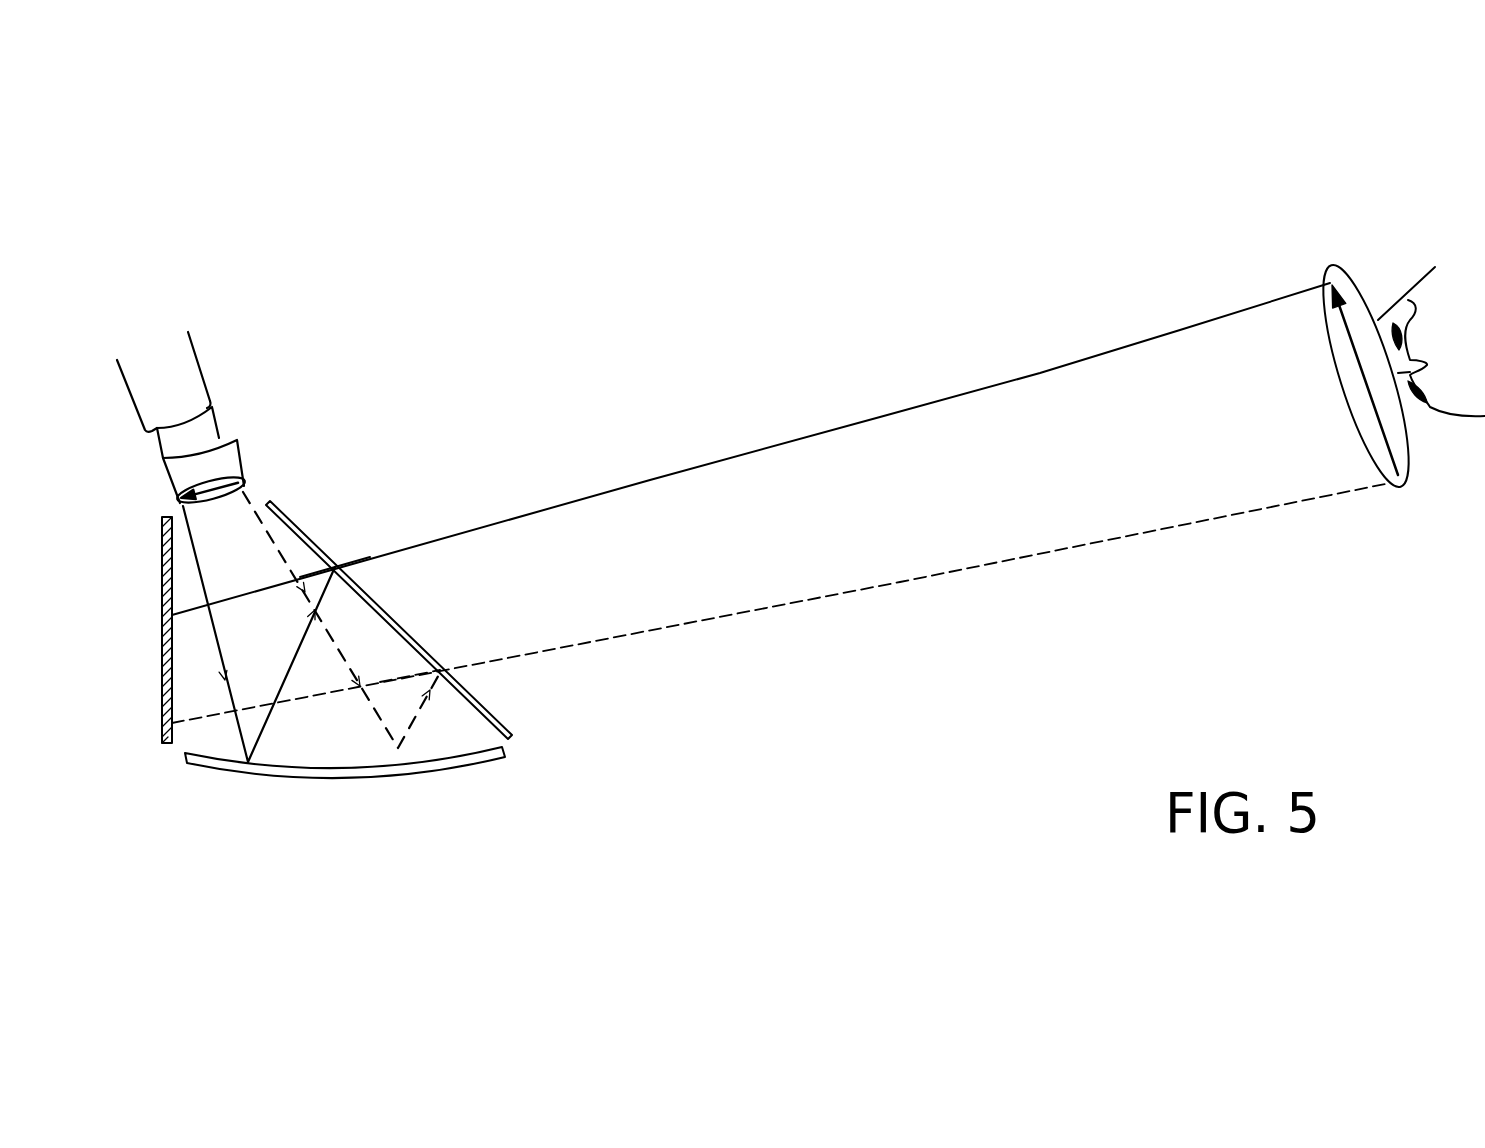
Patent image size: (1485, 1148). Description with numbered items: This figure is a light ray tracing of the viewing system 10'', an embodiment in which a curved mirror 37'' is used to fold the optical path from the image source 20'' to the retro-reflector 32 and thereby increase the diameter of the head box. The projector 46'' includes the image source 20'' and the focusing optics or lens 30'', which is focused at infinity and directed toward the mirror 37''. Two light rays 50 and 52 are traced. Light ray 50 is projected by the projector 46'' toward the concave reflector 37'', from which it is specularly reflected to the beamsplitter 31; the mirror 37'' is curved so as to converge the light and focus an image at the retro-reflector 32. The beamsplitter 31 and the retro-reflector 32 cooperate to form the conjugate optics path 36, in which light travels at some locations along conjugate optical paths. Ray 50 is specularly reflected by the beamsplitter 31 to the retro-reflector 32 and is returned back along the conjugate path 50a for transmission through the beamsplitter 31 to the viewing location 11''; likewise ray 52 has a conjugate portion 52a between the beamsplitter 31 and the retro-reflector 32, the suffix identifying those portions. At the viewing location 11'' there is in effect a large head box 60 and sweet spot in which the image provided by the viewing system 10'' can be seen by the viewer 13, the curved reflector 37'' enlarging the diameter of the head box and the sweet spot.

The viewing system 10'' is at (751, 449).
The viewing location 11'' is at (1404, 403).
The viewer 13 is at (1437, 300).
The image source 20'' is at (164, 382).
The focusing optics or lens 30'' is at (237, 457).
The beamsplitter 31 is at (503, 712).
The retro-reflector 32 is at (162, 612).
The conjugate optics path 36 is at (414, 655).
The curved mirror 37'' is at (363, 778).
The projector 46'' is at (223, 407).
The light ray 50 is at (216, 633).
The conjugate path 50a is at (337, 565).
The light ray 52 is at (300, 548).
The conjugate optical path portion 52a is at (406, 672).
The large head box 60 is at (1297, 349).